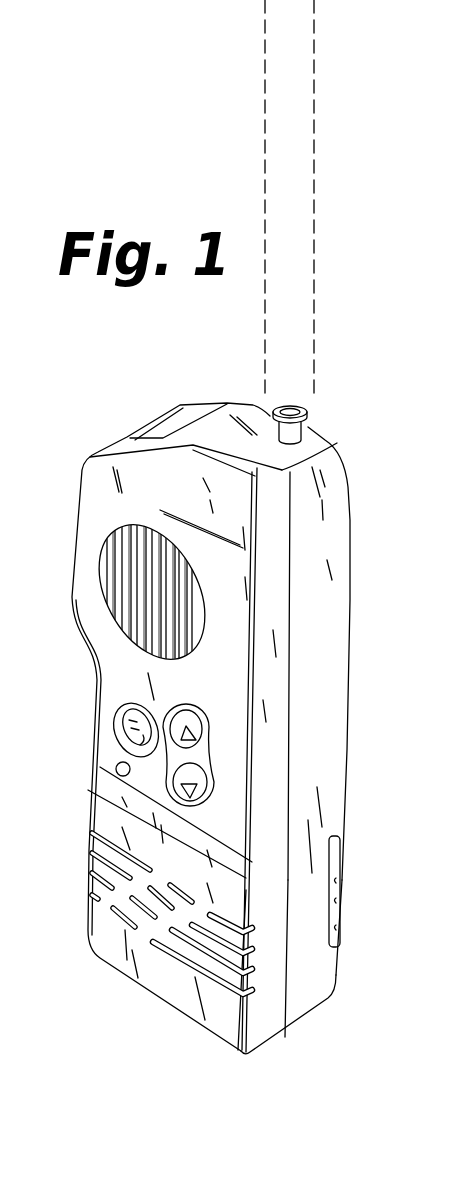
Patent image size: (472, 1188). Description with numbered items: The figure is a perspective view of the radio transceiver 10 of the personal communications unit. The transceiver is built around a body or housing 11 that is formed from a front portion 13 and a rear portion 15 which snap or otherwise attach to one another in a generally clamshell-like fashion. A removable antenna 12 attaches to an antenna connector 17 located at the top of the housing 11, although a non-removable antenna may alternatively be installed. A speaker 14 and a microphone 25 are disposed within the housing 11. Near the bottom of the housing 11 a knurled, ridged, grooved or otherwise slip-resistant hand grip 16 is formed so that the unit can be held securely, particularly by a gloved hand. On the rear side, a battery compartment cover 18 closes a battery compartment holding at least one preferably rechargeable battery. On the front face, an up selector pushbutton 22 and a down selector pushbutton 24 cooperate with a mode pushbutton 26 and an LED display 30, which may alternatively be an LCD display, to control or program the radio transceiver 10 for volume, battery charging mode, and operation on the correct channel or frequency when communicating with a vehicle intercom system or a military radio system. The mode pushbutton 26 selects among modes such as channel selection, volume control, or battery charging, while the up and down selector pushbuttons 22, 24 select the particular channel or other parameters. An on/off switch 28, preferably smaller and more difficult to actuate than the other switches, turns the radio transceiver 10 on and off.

The radio transceiver 10 is at (74, 671).
The housing 11 is at (348, 560).
The antenna 12 is at (314, 277).
The front portion 13 is at (264, 1036).
The speaker 14 is at (102, 570).
The rear portion 15 is at (308, 1004).
The hand grip 16 is at (178, 960).
The antenna connector 17 is at (280, 406).
The battery compartment cover 18 is at (340, 906).
The up selector pushbutton 22 is at (188, 711).
The down selector pushbutton 24 is at (196, 800).
The microphone 25 is at (120, 797).
The mode pushbutton 26 is at (128, 722).
The on/off switch 28 is at (116, 764).
The LED display 30 is at (181, 418).